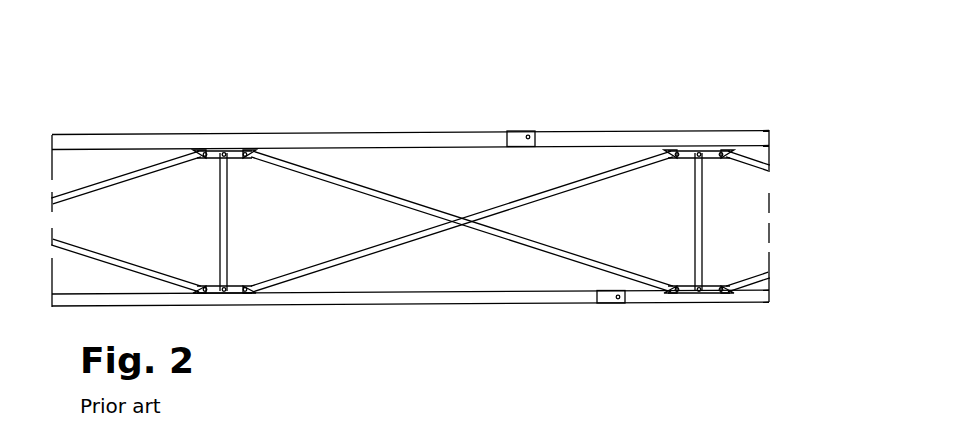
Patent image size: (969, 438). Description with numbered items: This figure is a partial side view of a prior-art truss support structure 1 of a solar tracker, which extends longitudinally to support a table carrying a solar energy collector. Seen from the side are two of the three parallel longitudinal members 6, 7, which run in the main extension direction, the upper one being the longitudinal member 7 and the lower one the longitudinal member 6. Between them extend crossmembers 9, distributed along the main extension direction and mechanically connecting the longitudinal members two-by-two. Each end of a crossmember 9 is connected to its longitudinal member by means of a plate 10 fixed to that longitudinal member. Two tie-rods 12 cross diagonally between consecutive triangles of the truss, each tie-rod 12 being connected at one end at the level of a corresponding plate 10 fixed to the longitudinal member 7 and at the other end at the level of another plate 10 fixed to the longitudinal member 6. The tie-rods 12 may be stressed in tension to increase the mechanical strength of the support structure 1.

The support structure 1 is at (224, 123).
The longitudinal member 6 is at (534, 297).
The longitudinal member 7 is at (340, 134).
The crossmember 9 is at (226, 220).
The plate 10 is at (210, 160).
The tie-rod 12 is at (337, 252).